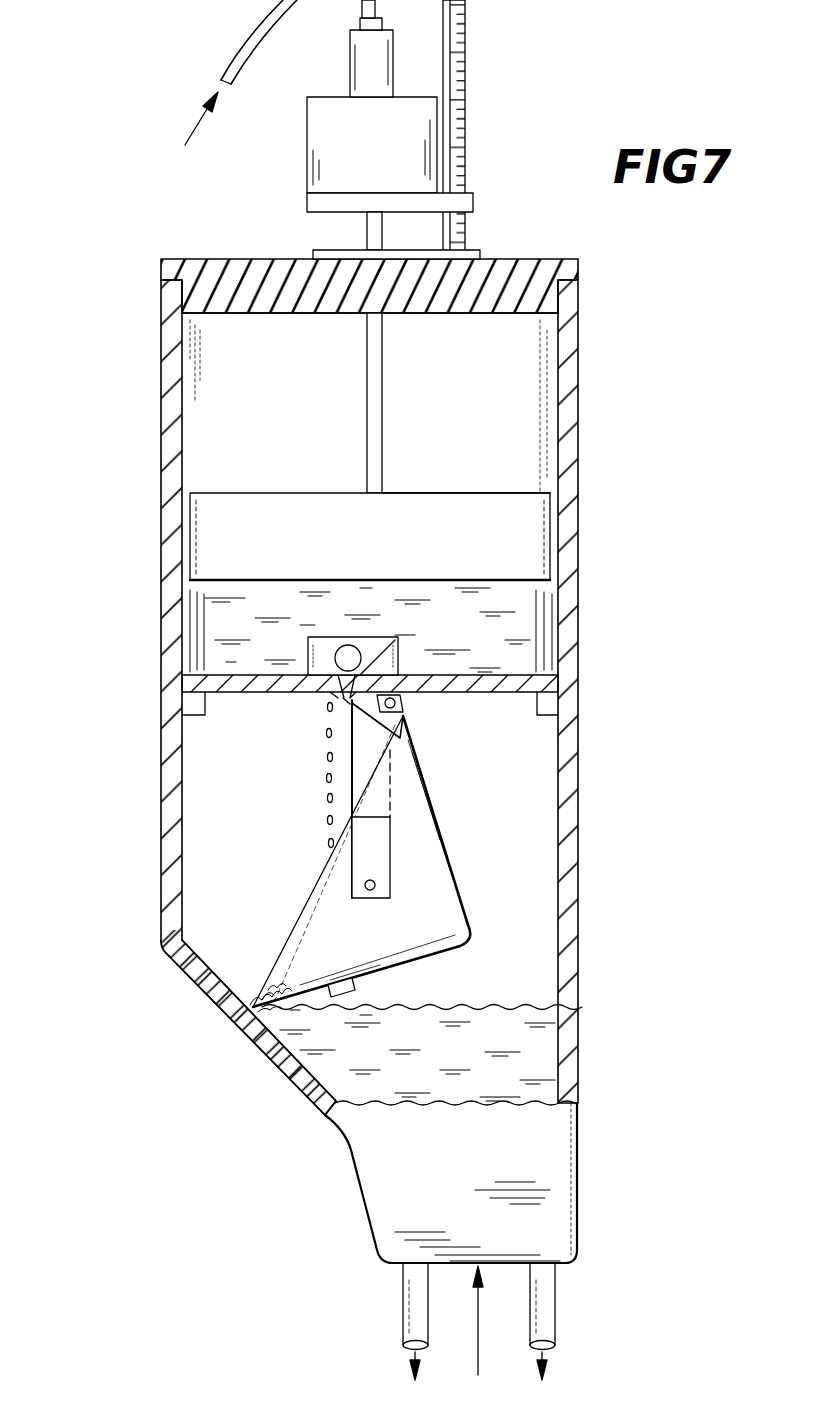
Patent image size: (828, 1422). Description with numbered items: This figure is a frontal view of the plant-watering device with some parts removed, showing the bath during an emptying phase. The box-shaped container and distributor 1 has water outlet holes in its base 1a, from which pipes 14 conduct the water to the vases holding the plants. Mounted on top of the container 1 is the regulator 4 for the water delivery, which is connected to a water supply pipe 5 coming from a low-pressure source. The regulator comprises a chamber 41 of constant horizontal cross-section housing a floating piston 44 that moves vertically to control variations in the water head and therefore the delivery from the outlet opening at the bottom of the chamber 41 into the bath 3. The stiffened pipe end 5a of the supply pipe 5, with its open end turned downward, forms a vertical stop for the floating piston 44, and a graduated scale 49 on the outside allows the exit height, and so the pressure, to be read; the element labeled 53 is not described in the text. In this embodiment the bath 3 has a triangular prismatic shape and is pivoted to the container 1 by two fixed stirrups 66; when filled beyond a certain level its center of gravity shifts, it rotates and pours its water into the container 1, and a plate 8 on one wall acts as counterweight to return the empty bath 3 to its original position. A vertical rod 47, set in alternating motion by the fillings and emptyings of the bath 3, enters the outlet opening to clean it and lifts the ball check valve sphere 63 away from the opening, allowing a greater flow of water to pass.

The container and distributor 1 is at (592, 952).
The base of the container 1a is at (474, 1334).
The bath 3 is at (420, 857).
The regulator 4 is at (158, 320).
The water supply pipe 5 is at (252, 39).
The pipe end 5a is at (377, 428).
The plate 8 is at (332, 992).
The pipes 14 is at (417, 1317).
The chamber 41 is at (250, 398).
The floating piston 44 is at (230, 542).
The vertical rod 47 is at (343, 697).
The graduated scale 49 is at (462, 87).
The piston seal 53 is at (383, 497).
The ball check valve sphere 63 is at (348, 658).
The fixed stirrups 66 is at (368, 845).